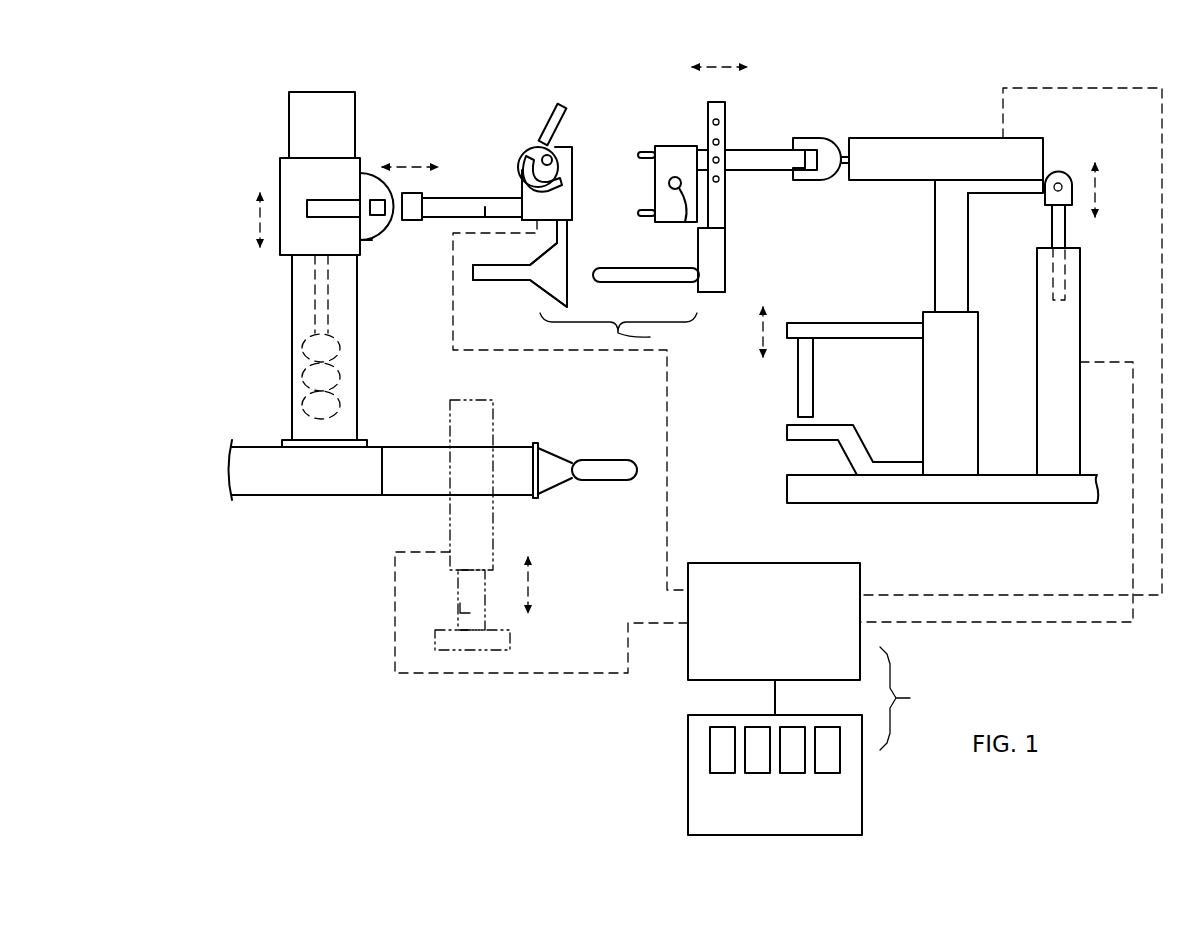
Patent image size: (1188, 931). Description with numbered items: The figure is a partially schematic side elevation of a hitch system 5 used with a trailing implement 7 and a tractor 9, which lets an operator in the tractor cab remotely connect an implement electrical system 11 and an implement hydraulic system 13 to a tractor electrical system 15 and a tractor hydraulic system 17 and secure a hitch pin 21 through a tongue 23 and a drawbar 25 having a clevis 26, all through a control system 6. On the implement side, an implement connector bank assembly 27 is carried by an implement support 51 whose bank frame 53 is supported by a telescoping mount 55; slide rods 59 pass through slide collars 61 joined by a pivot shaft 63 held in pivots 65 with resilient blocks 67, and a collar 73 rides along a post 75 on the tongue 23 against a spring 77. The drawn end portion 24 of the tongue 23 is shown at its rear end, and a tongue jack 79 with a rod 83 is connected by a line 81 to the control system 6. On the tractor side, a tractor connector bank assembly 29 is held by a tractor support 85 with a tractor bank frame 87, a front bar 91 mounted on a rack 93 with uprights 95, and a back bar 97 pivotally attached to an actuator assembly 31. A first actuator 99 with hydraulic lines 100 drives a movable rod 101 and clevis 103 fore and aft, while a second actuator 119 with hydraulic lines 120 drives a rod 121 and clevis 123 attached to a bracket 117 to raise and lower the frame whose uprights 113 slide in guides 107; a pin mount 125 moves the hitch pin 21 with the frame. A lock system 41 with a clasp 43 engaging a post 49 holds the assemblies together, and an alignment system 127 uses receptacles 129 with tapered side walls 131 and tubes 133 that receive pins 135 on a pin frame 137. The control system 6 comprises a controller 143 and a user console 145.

The hitch system 5 is at (486, 747).
The control system 6 is at (912, 698).
The trailing implement 7 is at (243, 513).
The tractor 9 is at (1092, 518).
The implement electrical system 11 is at (579, 163).
The implement hydraulic system 13 is at (579, 209).
The tractor electrical system 15 is at (646, 168).
The tractor hydraulic system 17 is at (646, 203).
The hitch pin 21 is at (806, 383).
The tongue 23 is at (539, 504).
The handle 24 is at (610, 467).
The drawbar 25 is at (853, 509).
The clevis 26 is at (782, 433).
The implement connector bank assembly 27 is at (510, 158).
The tractor connector bank assembly 29 is at (664, 136).
The actuator assembly 31 is at (958, 134).
The lock system 41 is at (550, 97).
The clasp 43 is at (534, 146).
The post 49 is at (682, 217).
The implement support 51 is at (370, 77).
The bank frame 53 is at (450, 190).
The telescoping mount 55 is at (281, 83).
The slide rods 59 is at (485, 207).
The slide collars 61 is at (413, 221).
The pivot shaft 63 is at (382, 218).
The pivots 65 is at (372, 163).
The block 67 is at (377, 218).
The collar 73 is at (280, 158).
The post 75 is at (292, 300).
The spring 77 is at (302, 385).
The tongue jack 79 is at (446, 515).
The electrical or hydraulic line 81 is at (395, 613).
The rod 83 is at (457, 612).
The tractor support 85 is at (777, 177).
The tractor bank frame 87 is at (773, 142).
The front bar 91 is at (703, 152).
The rack assembly 93 is at (722, 93).
The uprights 95 is at (721, 194).
The back bar 97 is at (745, 160).
The first actuator 99 is at (882, 148).
The hydraulic lines 100 is at (1100, 87).
The movable rod 101 is at (842, 169).
The clevis 103 is at (828, 152).
The guides 107 is at (967, 417).
The uprights 113 is at (943, 250).
The bracket 117 is at (1005, 190).
The second actuator 119 is at (1050, 332).
The hydraulic lines 120 is at (1108, 360).
The movable rod 121 is at (1067, 223).
The clevis 123 is at (1067, 173).
The pin mount 125 is at (850, 331).
The alignment system 127 is at (619, 330).
The receptacles 129 is at (575, 297).
The side walls 131 is at (543, 283).
The tubes 133 is at (480, 280).
The pins 135 is at (662, 270).
The pin frame 137 is at (729, 287).
The controller 143 is at (793, 633).
The user console 145 is at (793, 818).